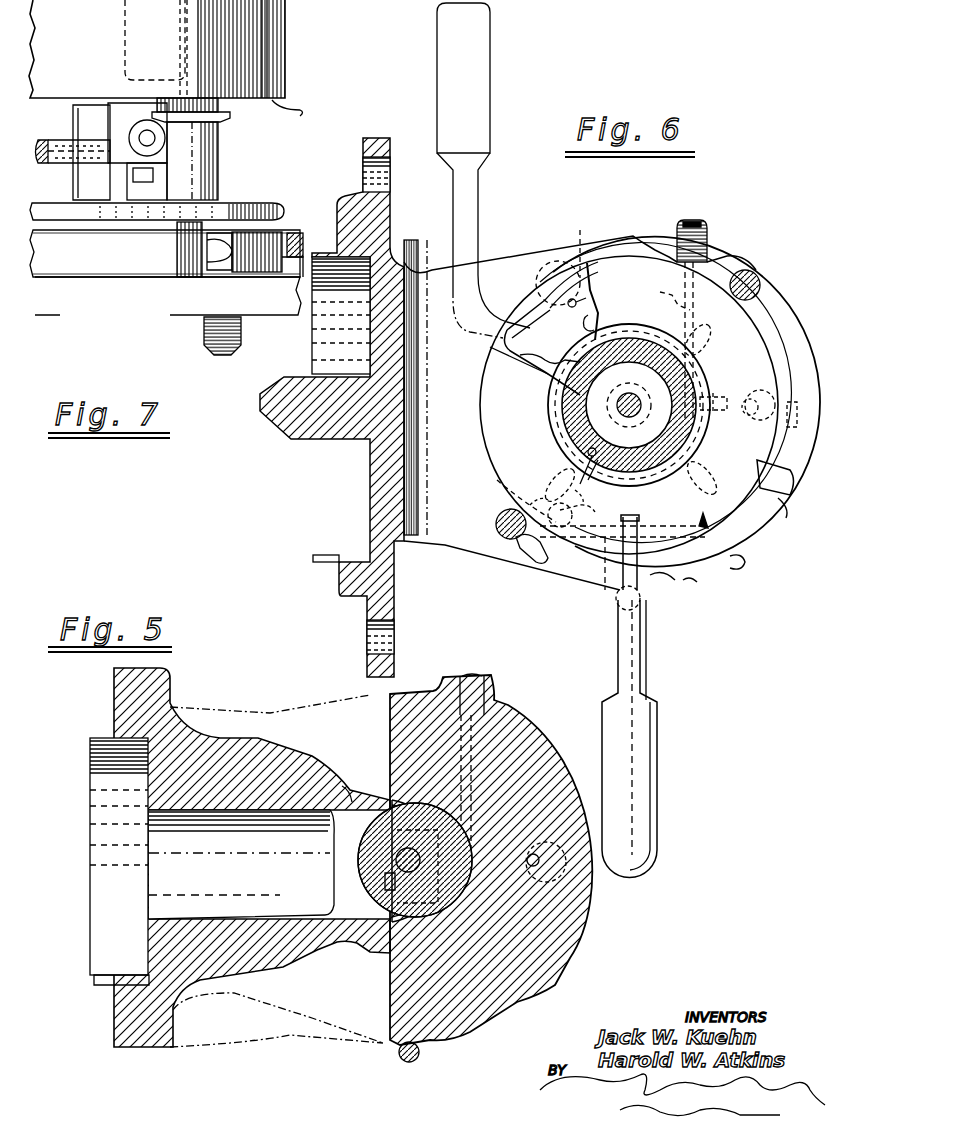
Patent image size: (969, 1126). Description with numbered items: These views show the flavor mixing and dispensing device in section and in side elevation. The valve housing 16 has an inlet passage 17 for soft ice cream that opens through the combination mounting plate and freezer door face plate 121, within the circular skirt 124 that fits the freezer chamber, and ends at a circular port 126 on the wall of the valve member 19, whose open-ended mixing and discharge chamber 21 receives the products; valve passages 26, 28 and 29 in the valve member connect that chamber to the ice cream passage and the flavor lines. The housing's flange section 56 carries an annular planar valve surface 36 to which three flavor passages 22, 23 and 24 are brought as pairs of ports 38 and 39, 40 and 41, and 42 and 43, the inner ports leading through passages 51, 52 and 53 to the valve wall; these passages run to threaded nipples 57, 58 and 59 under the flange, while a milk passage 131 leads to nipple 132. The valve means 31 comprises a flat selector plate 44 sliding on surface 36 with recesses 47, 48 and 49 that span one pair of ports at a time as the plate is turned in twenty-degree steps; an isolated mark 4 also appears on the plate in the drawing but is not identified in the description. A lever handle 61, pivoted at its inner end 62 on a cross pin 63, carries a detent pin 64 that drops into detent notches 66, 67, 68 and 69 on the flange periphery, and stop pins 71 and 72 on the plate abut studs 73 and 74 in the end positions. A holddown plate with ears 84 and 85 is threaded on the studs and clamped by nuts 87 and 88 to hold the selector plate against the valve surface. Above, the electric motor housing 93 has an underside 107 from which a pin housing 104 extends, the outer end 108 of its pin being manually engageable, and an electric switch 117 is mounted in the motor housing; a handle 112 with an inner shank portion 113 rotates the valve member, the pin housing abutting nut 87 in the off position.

In FIG. 6, the base plate 4 is at (505, 411).
In FIG. 6, the valve housing 16 is at (511, 260).
In FIG. 5, the inlet passage 17 is at (172, 851).
In FIG. 5, the valve member 19 is at (398, 892).
In FIG. 5, the product mixing and discharge chamber 21 is at (394, 860).
In FIG. 6, the flavor material passage 22 is at (571, 263).
In FIG. 6, the flavor material passage 23 is at (758, 390).
In FIG. 5, the flavor material passage 23 is at (535, 852).
In FIG. 6, the flavor material passage 24 is at (505, 494).
In FIG. 5, the valve passage 26 is at (374, 944).
In FIG. 5, the valve passage 28 is at (392, 752).
In FIG. 5, the valve passage 29 is at (392, 984).
In FIG. 6, the valve means 31 is at (692, 575).
In FIG. 6, the annular planar valve surface 36 is at (525, 325).
In FIG. 6, the port 38 is at (584, 302).
In FIG. 6, the port 39 is at (594, 320).
In FIG. 6, the port 40 is at (750, 417).
In FIG. 6, the port 41 is at (716, 395).
In FIG. 6, the port 42 is at (583, 514).
In FIG. 6, the port 43 is at (598, 488).
In FIG. 7, the flat valve selector plate 44 is at (265, 232).
In FIG. 6, the flat valve selector plate 44 is at (480, 412).
In FIG. 6, the recess 47 is at (708, 345).
In FIG. 6, the recess 48 is at (712, 472).
In FIG. 6, the recess 49 is at (542, 475).
In FIG. 6, the passage 51 is at (612, 345).
In FIG. 6, the passage 52 is at (697, 425).
In FIG. 6, the passage 53 is at (562, 448).
In FIG. 7, the flange section 56 is at (258, 303).
In FIG. 6, the flange section 56 is at (723, 568).
In FIG. 5, the flange section 56 is at (589, 900).
In FIG. 6, the threaded nipple 57 is at (552, 262).
In FIG. 6, the threaded nipple 58 is at (792, 425).
In FIG. 7, the threaded nipple 59 is at (212, 333).
In FIG. 6, the threaded nipple 59 is at (556, 576).
In FIG. 6, the lever handle 61 is at (645, 790).
In FIG. 7, the inner end 62 is at (298, 240).
In FIG. 6, the inner end 62 is at (640, 568).
In FIG. 6, the cross pin 63 is at (600, 593).
In FIG. 6, the detent pin 64 is at (616, 622).
In FIG. 5, the detent pin 64 is at (410, 1062).
In FIG. 6, the detent notch 66 is at (641, 605).
In FIG. 5, the detent notch 66 is at (399, 1053).
In FIG. 6, the detent notch 67 is at (690, 582).
In FIG. 5, the detent notch 67 is at (470, 1034).
In FIG. 6, the detent notch 68 is at (740, 562).
In FIG. 5, the detent notch 68 is at (517, 1003).
In FIG. 6, the detent notch 69 is at (781, 500).
In FIG. 5, the detent notch 69 is at (559, 958).
In FIG. 7, the stop pin 71 is at (224, 258).
In FIG. 6, the stop pin 71 is at (528, 560).
In FIG. 6, the stop pin 72 is at (752, 512).
In FIG. 7, the stud 73 is at (182, 252).
In FIG. 6, the stud 73 is at (506, 540).
In FIG. 6, the stud 74 is at (748, 272).
In FIG. 7, the ear 84 is at (284, 205).
In FIG. 7, the ear 85 is at (185, 213).
In FIG. 7, the nut 87 is at (205, 160).
In FIG. 7, the nut 88 is at (68, 135).
In FIG. 7, the electric motor housing 93 is at (268, 14).
In FIG. 7, the pin housing 104 is at (136, 148).
In FIG. 7, the underside 107 is at (296, 119).
In FIG. 7, the outer end 108 is at (145, 138).
In FIG. 6, the handle 112 is at (490, 88).
In FIG. 7, the inner shank portion 113 is at (62, 160).
In FIG. 7, the electric switch 117 is at (128, 46).
In FIG. 7, the combination mounting plate and freezer door face plate 121 is at (352, 588).
In FIG. 5, the combination mounting plate and freezer door face plate 121 is at (172, 668).
In FIG. 7, the circular skirt 124 is at (322, 559).
In FIG. 5, the circular skirt 124 is at (100, 735).
In FIG. 5, the circular port 126 is at (340, 783).
In FIG. 6, the passage 131 is at (662, 297).
In FIG. 5, the passage 131 is at (494, 706).
In FIG. 6, the nipple 132 is at (700, 232).
In FIG. 5, the nipple 132 is at (442, 675).